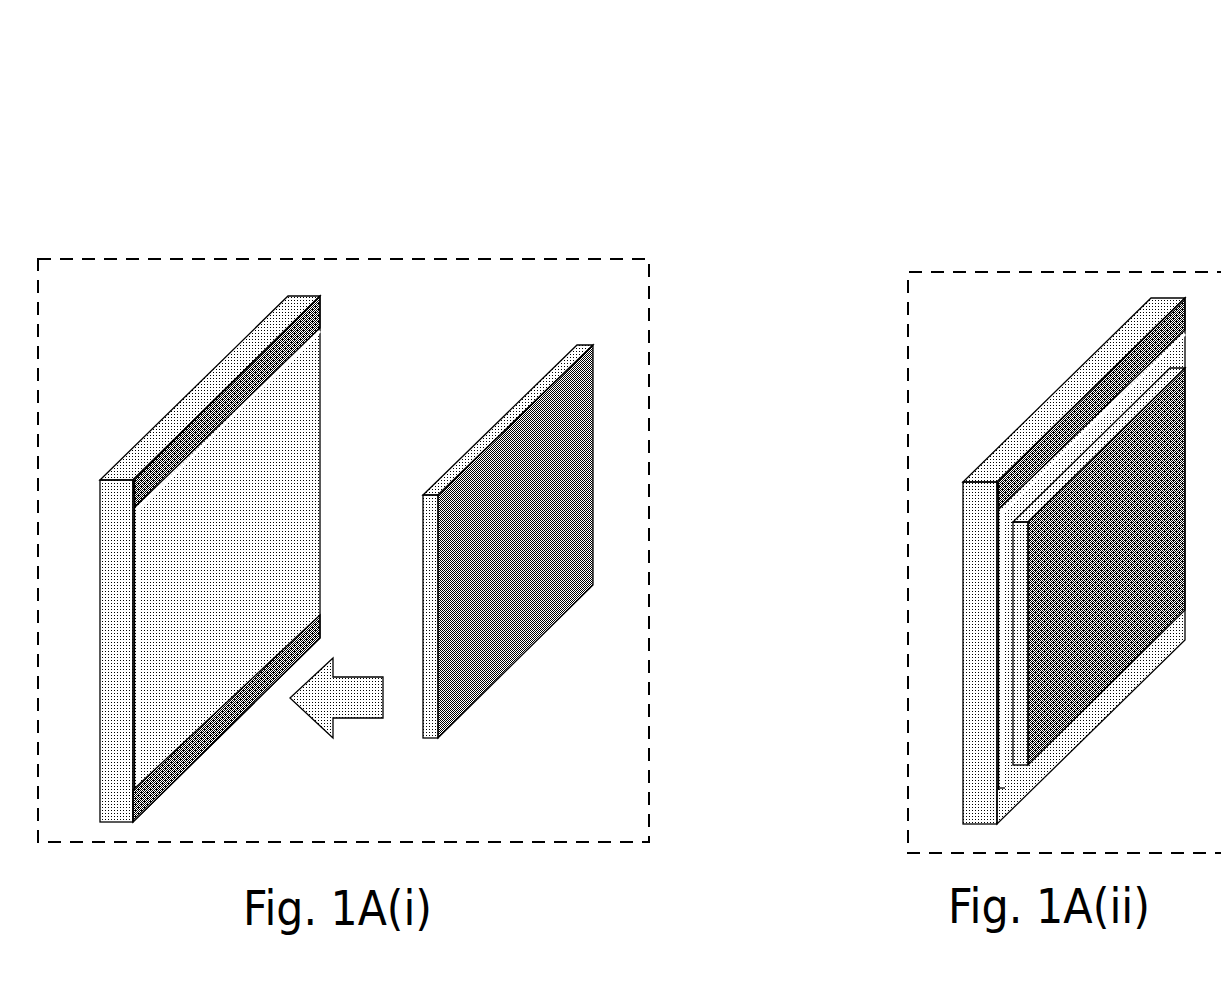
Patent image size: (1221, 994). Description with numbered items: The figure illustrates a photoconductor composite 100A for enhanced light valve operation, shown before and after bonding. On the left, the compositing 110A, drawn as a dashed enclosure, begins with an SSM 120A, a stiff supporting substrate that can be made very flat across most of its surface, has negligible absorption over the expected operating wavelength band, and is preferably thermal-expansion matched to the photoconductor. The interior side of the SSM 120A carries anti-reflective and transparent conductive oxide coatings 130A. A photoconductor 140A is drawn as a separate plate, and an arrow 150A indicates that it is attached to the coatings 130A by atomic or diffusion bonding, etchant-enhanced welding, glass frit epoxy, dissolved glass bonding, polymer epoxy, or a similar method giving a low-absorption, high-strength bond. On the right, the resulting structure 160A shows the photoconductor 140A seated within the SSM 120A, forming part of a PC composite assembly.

The photoconductor composite 100A is at (161, 128).
The compositing 110A is at (657, 294).
The SSM 120A is at (300, 282).
The anti-reflective and transparent conductive oxide coatings 130A is at (330, 322).
The photoconductor 140A is at (586, 322).
The arrow 150A is at (353, 644).
The resulting structure 160A is at (896, 359).